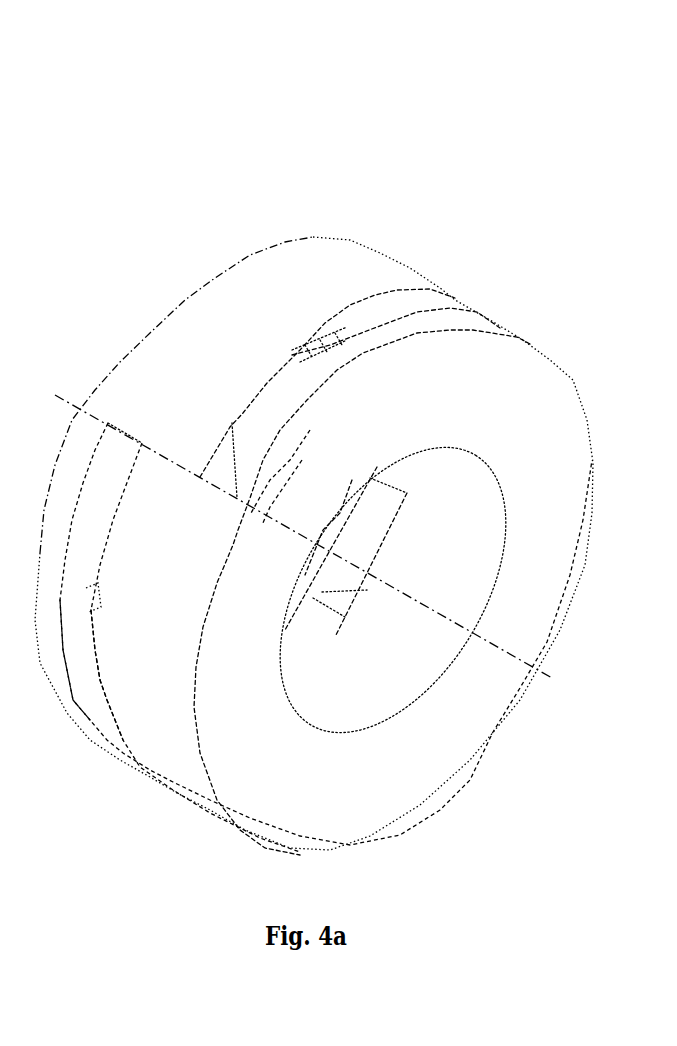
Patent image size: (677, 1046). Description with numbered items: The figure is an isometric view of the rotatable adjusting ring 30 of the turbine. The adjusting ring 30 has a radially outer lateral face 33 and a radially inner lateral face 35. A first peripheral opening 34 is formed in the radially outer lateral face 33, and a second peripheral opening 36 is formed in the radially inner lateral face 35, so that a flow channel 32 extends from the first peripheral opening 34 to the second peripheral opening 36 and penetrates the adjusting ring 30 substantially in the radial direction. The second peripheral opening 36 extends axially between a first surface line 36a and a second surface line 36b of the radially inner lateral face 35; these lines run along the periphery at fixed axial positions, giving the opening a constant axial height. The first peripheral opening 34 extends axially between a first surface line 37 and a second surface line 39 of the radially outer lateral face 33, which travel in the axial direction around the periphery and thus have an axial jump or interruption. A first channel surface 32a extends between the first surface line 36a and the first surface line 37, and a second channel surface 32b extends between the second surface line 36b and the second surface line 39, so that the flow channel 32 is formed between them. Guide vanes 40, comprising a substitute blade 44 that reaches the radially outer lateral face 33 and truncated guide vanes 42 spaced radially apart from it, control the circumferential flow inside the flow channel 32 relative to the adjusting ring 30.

The adjusting ring 30 is at (207, 175).
The flow channel 32 is at (390, 312).
The first channel surface 32a is at (353, 327).
The second channel surface 32b is at (273, 403).
The radially outer lateral face 33 is at (155, 472).
The first peripheral opening 34 is at (455, 298).
The radially inner lateral face 35 is at (378, 663).
The second peripheral opening 36 is at (380, 496).
The first surface line 36a is at (360, 517).
The second surface line 36b is at (378, 572).
The first surface line 37 is at (90, 720).
The second surface line 39 is at (123, 743).
The guide vanes 40 is at (359, 477).
The truncated guide vanes 42 is at (333, 603).
The substitute blade 44 is at (224, 473).